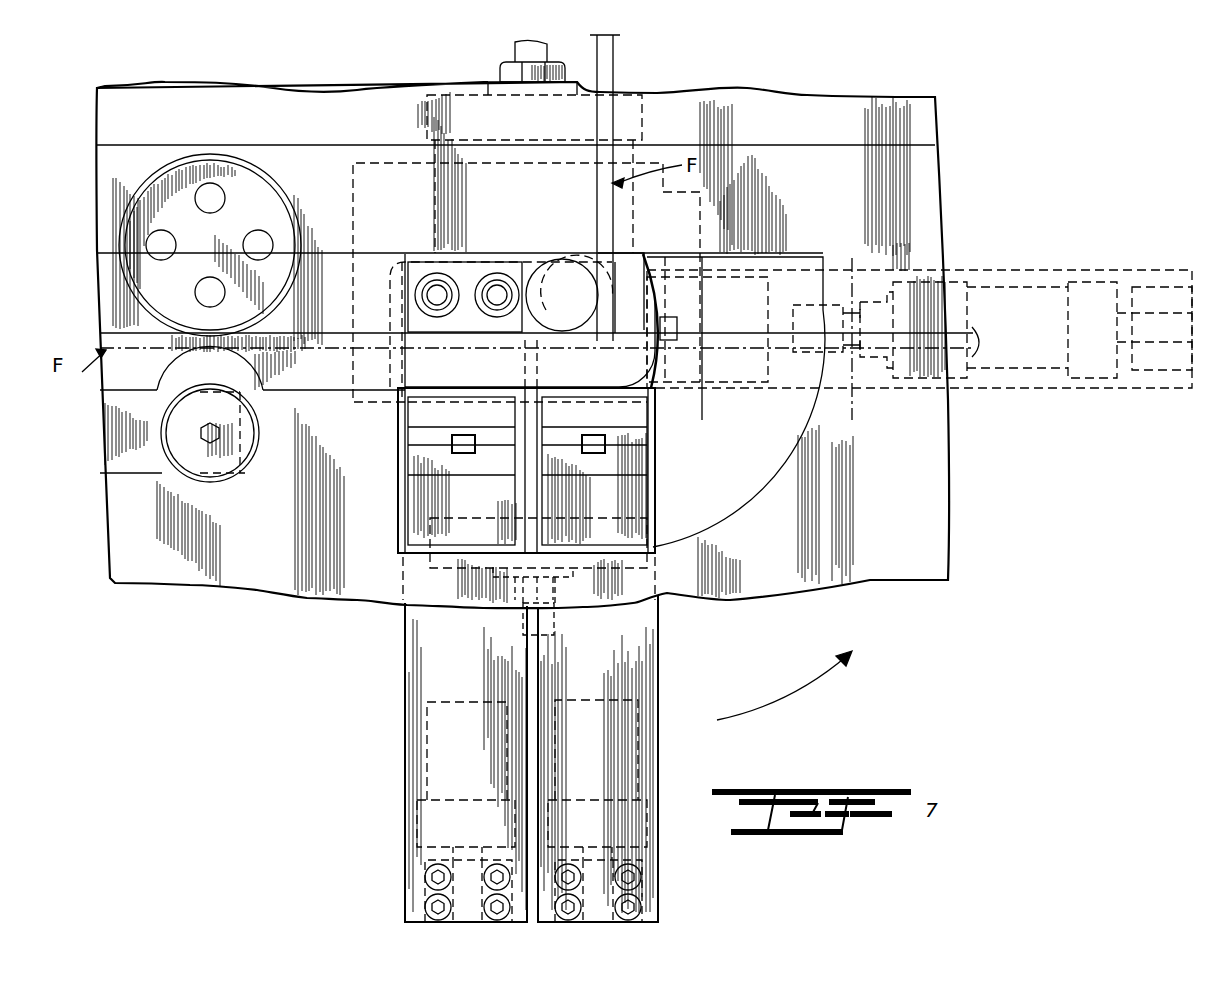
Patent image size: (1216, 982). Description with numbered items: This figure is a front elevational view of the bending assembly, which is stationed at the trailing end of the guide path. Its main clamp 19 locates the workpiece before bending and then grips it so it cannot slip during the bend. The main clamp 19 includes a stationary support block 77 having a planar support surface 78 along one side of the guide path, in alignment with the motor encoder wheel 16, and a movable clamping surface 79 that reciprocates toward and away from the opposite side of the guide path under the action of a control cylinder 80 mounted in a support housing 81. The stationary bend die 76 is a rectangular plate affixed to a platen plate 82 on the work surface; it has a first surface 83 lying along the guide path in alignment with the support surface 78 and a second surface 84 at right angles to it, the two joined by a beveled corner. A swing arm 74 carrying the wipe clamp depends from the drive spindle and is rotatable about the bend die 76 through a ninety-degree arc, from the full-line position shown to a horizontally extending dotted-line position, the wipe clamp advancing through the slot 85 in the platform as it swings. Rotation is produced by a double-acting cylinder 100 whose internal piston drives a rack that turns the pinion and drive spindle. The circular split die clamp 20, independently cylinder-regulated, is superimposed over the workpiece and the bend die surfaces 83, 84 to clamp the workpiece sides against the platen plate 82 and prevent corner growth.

The motor encoder wheel 16 is at (268, 190).
The main clamp 19 is at (410, 492).
The split die clamp 20 is at (665, 306).
The swing arm 74 is at (660, 662).
The bend die 76 is at (606, 334).
The support block 77 is at (519, 304).
The planar support surface 78 is at (400, 340).
The movable clamping surface 79 is at (416, 404).
The control cylinder 80 is at (427, 732).
The support housing 81 is at (417, 812).
The platen plate 82 is at (392, 160).
The first surface 83 is at (569, 334).
The second surface 84 is at (618, 264).
The slot 85 is at (712, 522).
The double-acting cylinder 100 is at (655, 108).